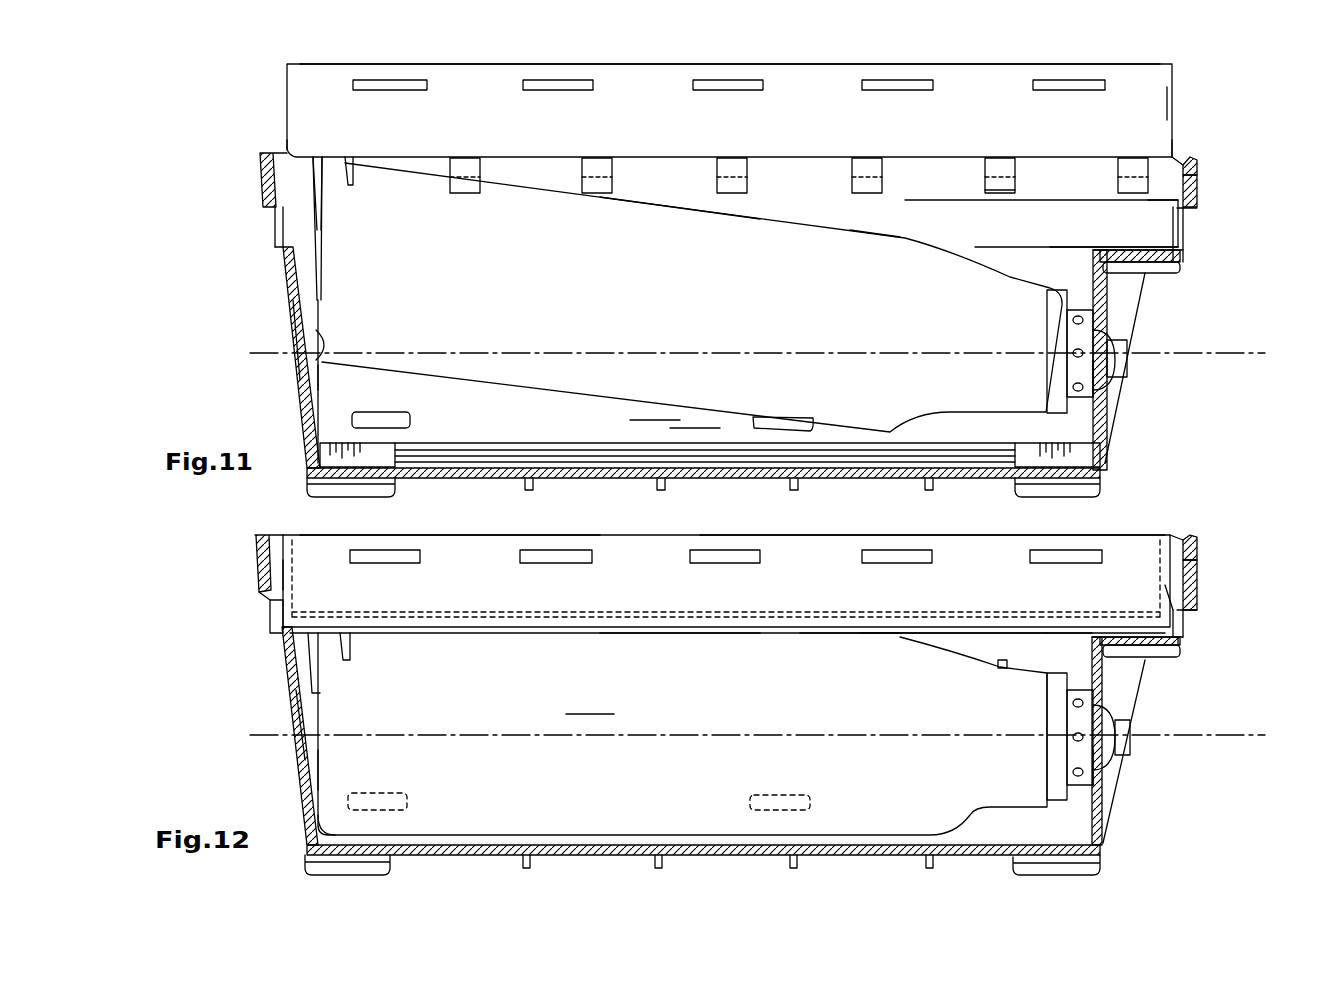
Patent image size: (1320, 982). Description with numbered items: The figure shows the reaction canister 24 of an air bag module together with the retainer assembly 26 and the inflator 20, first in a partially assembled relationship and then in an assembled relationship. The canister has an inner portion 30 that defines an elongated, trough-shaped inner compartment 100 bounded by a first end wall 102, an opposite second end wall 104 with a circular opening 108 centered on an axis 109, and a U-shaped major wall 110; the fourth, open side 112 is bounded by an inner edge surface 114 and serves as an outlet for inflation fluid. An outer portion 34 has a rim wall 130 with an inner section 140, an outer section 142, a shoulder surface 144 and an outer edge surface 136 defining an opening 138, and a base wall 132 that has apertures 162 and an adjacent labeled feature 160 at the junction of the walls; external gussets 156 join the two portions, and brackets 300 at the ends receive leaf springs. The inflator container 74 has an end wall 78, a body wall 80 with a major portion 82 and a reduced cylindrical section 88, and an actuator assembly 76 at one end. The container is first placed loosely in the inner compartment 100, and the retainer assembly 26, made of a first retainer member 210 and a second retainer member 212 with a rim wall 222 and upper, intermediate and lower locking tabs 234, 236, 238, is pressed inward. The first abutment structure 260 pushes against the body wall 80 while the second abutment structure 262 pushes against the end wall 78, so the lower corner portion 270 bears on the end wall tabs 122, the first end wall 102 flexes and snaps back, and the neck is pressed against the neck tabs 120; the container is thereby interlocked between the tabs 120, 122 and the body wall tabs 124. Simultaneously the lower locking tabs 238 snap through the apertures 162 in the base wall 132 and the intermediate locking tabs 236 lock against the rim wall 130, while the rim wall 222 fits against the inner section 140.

In FIG. 11, the inflator 20 is at (683, 200).
In FIG. 12, the inflator 20 is at (668, 632).
In FIG. 11, the reaction canister 24 is at (697, 315).
In FIG. 12, the reaction canister 24 is at (708, 691).
In FIG. 11, the retainer assembly 26 is at (728, 114).
In FIG. 12, the retainer assembly 26 is at (726, 564).
In FIG. 11, the inner portion 30 is at (683, 380).
In FIG. 12, the inner portion 30 is at (670, 764).
In FIG. 11, the outer portion 34 is at (258, 160).
In FIG. 12, the outer portion 34 is at (255, 554).
In FIG. 11, the container 74 is at (726, 248).
In FIG. 12, the container 74 is at (757, 670).
In FIG. 11, the actuator assembly 76 is at (1100, 332).
In FIG. 12, the actuator assembly 76 is at (1100, 717).
In FIG. 11, the end wall 78 is at (287, 280).
In FIG. 12, the end wall 78 is at (292, 714).
In FIG. 11, the body wall 80 is at (790, 228).
In FIG. 12, the body wall 80 is at (810, 645).
In FIG. 11, the major portion 82 is at (862, 257).
In FIG. 12, the major portion 82 is at (875, 660).
In FIG. 11, the cylindrical section 88 is at (1015, 284).
In FIG. 12, the cylindrical section 88 is at (1047, 688).
In FIG. 12, the inner compartment 100 is at (590, 703).
In FIG. 11, the first end wall 102 is at (297, 325).
In FIG. 12, the first end wall 102 is at (296, 760).
In FIG. 11, the second end wall 104 is at (1108, 430).
In FIG. 12, the second end wall 104 is at (1118, 741).
In FIG. 11, the circular opening 108 is at (1105, 383).
In FIG. 12, the circular opening 108 is at (1105, 768).
In FIG. 11, the axis 109 is at (1150, 350).
In FIG. 12, the axis 109 is at (1245, 735).
In FIG. 11, the major wall 110 is at (862, 472).
In FIG. 12, the major wall 110 is at (822, 850).
In FIG. 11, the open side 112 is at (990, 247).
In FIG. 12, the open side 112 is at (980, 636).
In FIG. 11, the inner edge surface 114 is at (1100, 247).
In FIG. 12, the inner edge surface 114 is at (1090, 633).
In FIG. 12, the neck tabs 120 is at (998, 667).
In FIG. 11, the end wall tabs 122 is at (315, 378).
In FIG. 12, the end wall tabs 122 is at (317, 764).
In FIG. 11, the body wall tabs 124 is at (365, 413).
In FIG. 12, the body wall tabs 124 is at (385, 793).
In FIG. 11, the rim wall 130 is at (1197, 210).
In FIG. 11, the base wall 132 is at (1160, 272).
In FIG. 12, the base wall 132 is at (1160, 649).
In FIG. 11, the outer edge surface 136 is at (1197, 165).
In FIG. 12, the outer edge surface 136 is at (1197, 542).
In FIG. 11, the opening 138 is at (1180, 158).
In FIG. 12, the opening 138 is at (1178, 530).
In FIG. 11, the inner section 140 is at (1173, 217).
In FIG. 12, the inner section 140 is at (1173, 592).
In FIG. 11, the outer section 142 is at (1197, 187).
In FIG. 12, the outer section 142 is at (1197, 567).
In FIG. 11, the shoulder surface 144 is at (985, 190).
In FIG. 12, the shoulder surface 144 is at (285, 574).
In FIG. 11, the external gussets 156 is at (652, 486).
In FIG. 12, the external gussets 156 is at (790, 868).
In FIG. 11, the shell upper wall 160 is at (280, 234).
In FIG. 12, the shell upper wall 160 is at (1178, 642).
In FIG. 11, the apertures 162 is at (274, 252).
In FIG. 12, the apertures 162 is at (265, 619).
In FIG. 12, the first retainer member 210 is at (438, 612).
In FIG. 12, the second retainer member 212 is at (447, 545).
In FIG. 11, the rim wall 222 is at (795, 90).
In FIG. 12, the rim wall 222 is at (787, 562).
In FIG. 11, the upper locking tabs 234 is at (287, 90).
In FIG. 12, the upper locking tabs 234 is at (920, 548).
In FIG. 11, the intermediate locking tabs 236 is at (287, 137).
In FIG. 12, the intermediate locking tabs 236 is at (270, 605).
In FIG. 11, the lower locking tabs 238 is at (1013, 183).
In FIG. 11, the first abutment structure 260 is at (353, 180).
In FIG. 12, the first abutment structure 260 is at (350, 657).
In FIG. 11, the second abutment structure 262 is at (288, 212).
In FIG. 12, the second abutment structure 262 is at (310, 657).
In FIG. 11, the lower corner portion 270 is at (310, 345).
In FIG. 12, the lower corner portion 270 is at (318, 820).
In FIG. 11, the brackets 300 is at (303, 488).
In FIG. 12, the brackets 300 is at (300, 870).